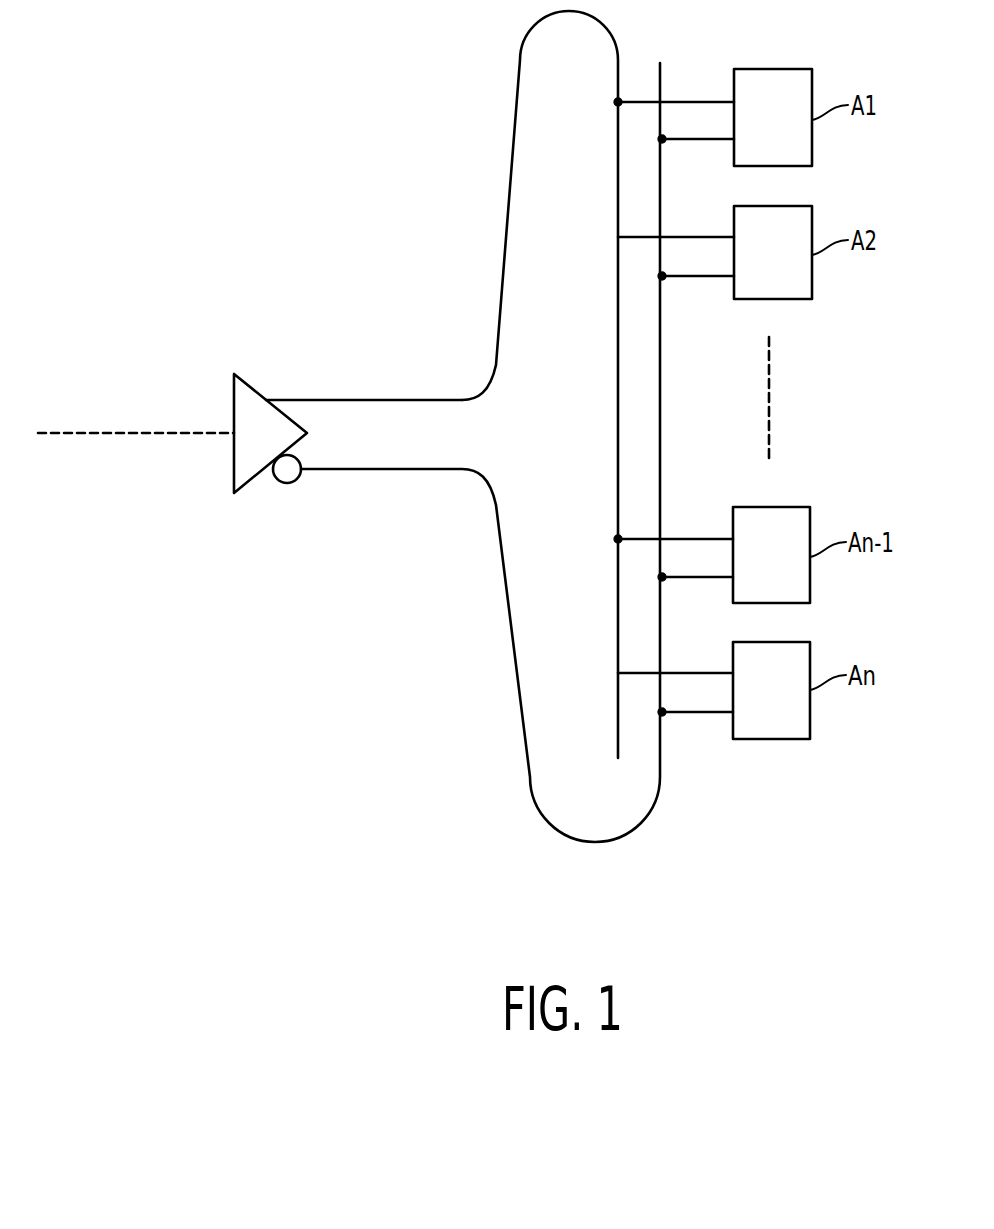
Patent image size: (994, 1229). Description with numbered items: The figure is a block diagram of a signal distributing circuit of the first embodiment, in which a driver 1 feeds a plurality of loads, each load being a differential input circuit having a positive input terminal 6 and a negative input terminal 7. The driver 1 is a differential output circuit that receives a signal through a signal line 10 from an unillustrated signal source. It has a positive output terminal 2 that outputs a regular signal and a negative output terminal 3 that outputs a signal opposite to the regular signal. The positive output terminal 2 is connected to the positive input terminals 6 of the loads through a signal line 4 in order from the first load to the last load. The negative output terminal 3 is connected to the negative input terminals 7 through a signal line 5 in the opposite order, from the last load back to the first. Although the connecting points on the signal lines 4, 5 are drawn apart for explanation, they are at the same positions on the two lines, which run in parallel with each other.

The driver 1 is at (237, 373).
The positive output terminal 2 is at (267, 400).
The negative output terminal 3 is at (283, 485).
The signal line 4 is at (506, 233).
The signal line 5 is at (512, 625).
The positive input terminal 6 is at (734, 101).
The negative input terminal 7 is at (734, 141).
The signal line 10 is at (145, 433).